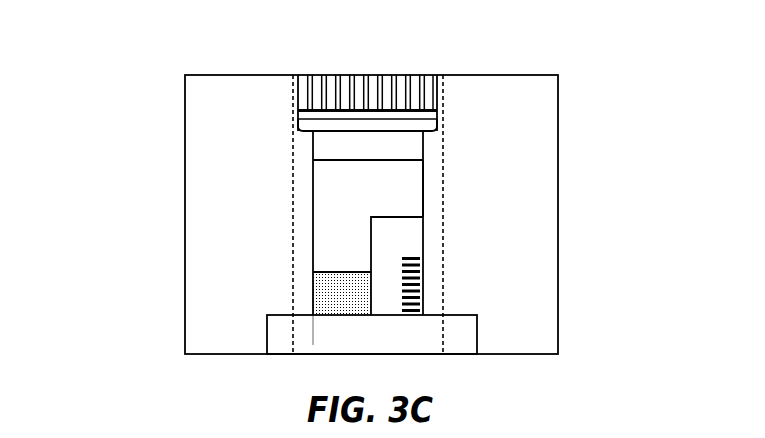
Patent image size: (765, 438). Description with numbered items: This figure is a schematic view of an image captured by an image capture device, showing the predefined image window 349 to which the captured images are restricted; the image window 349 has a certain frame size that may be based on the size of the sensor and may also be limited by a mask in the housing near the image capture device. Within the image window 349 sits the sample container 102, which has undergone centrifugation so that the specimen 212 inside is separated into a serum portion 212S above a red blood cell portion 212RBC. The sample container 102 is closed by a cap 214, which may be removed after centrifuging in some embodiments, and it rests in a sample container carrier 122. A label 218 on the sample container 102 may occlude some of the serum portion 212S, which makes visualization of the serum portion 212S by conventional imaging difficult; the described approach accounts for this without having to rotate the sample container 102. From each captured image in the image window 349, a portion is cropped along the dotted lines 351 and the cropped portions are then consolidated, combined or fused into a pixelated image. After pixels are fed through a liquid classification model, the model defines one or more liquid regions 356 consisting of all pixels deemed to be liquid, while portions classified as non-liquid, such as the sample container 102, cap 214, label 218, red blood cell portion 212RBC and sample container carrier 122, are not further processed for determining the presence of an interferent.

The sample container 102 is at (441, 68).
The sample container carrier 122 is at (477, 332).
The specimen 212 is at (302, 181).
The serum portion 212S is at (332, 220).
The red blood cell portion 212RBC is at (323, 285).
The cap 214 is at (294, 100).
The label 218 is at (423, 247).
The image window 349 is at (185, 280).
The dotted lines 351 is at (290, 128).
The liquid region 356 is at (423, 187).